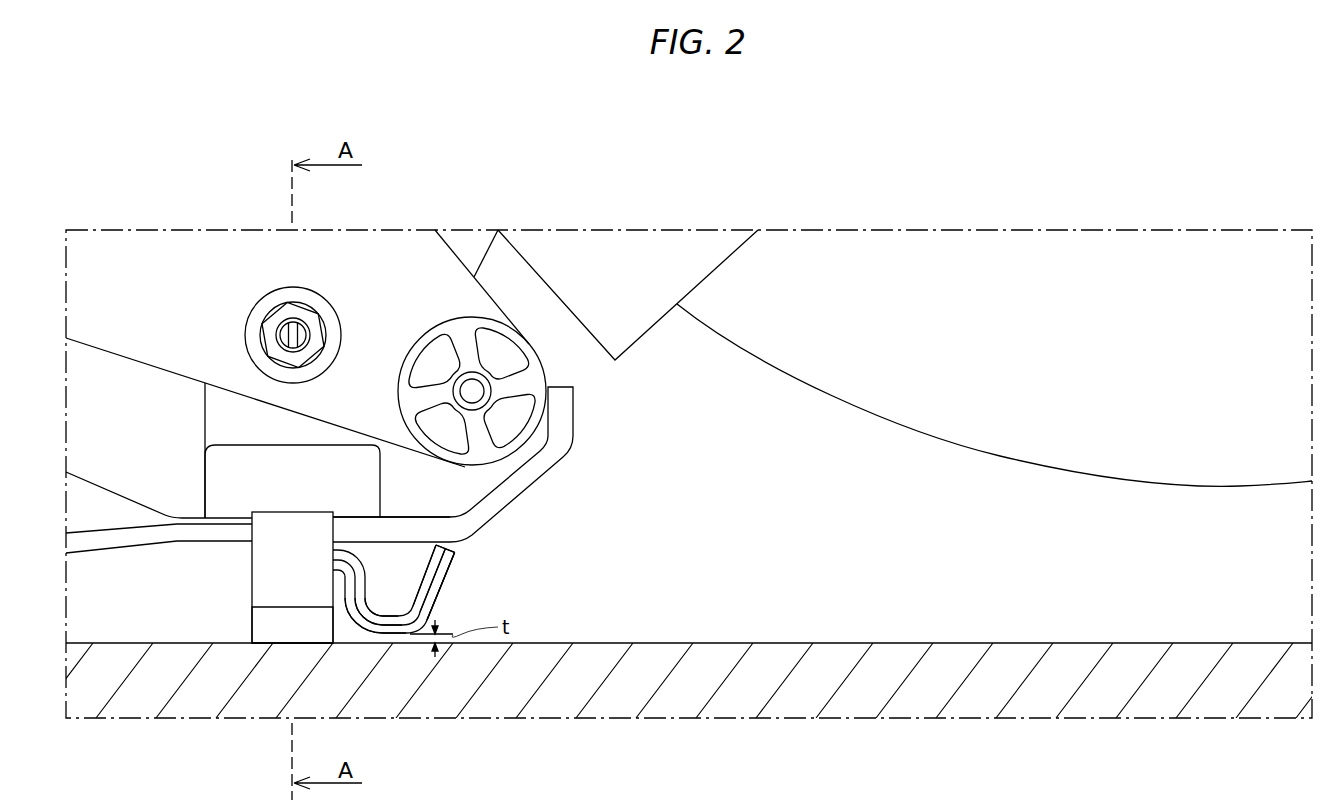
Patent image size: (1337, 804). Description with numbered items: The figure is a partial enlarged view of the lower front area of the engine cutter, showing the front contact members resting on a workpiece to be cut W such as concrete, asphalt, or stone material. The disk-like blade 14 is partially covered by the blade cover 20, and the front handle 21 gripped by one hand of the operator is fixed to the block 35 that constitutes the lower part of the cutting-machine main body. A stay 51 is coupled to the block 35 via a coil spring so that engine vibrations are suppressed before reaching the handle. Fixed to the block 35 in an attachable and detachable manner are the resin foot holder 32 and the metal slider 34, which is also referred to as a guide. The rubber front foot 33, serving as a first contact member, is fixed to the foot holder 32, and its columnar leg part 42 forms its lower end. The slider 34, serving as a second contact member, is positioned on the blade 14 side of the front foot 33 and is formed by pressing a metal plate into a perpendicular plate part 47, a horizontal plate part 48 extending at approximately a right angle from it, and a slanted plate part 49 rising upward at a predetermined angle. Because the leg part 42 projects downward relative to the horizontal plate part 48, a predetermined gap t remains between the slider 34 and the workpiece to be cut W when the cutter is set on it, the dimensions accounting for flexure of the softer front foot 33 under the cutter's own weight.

The blade 14 is at (1163, 463).
The blade cover 20 is at (650, 258).
The front handle 21 is at (470, 245).
The foot holder 32 is at (257, 575).
The front foot 33 is at (240, 622).
The slider 34 is at (455, 598).
The block 35 is at (223, 478).
The leg part 42 is at (285, 637).
The perpendicular plate part 47 is at (356, 589).
The horizontal plate part 48 is at (386, 636).
The slanted plate part 49 is at (445, 570).
The stay 51 is at (146, 258).
The workpiece to be cut W is at (852, 643).